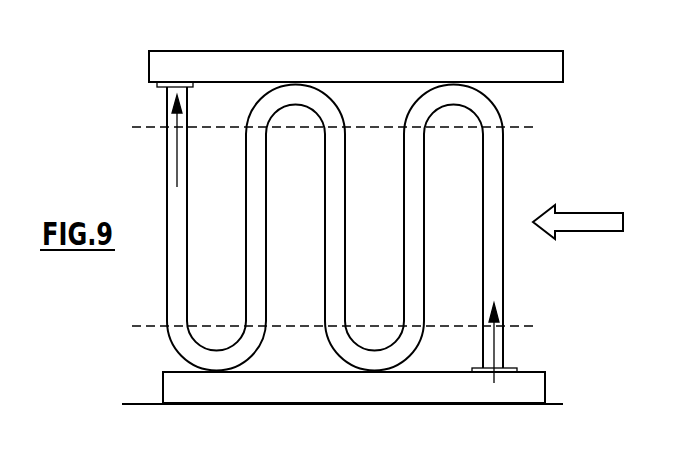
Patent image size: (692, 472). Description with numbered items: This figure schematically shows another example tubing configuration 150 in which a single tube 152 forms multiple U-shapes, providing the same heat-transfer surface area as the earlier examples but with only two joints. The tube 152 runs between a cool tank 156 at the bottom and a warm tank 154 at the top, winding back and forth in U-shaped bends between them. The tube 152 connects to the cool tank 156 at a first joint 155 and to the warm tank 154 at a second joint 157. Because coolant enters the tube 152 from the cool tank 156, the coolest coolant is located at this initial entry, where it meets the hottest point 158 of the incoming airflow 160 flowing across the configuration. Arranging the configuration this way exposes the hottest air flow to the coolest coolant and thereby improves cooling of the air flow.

The tubing configuration 150 is at (382, 260).
The tube 152 is at (488, 118).
The warm tank 154 is at (563, 65).
The first joint 155 is at (480, 372).
The cool tank 156 is at (528, 388).
The second joint 157 is at (192, 87).
The hottest point 158 is at (512, 355).
The incoming airflow 160 is at (598, 231).